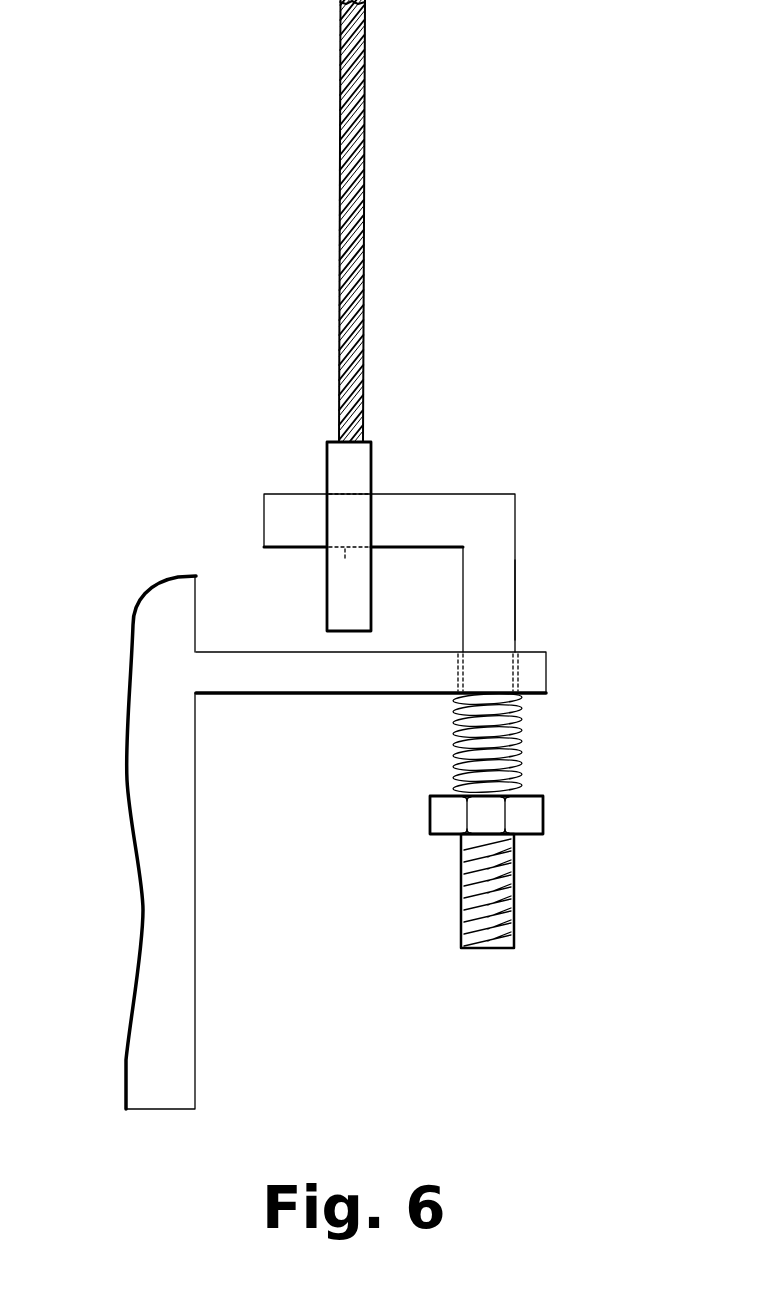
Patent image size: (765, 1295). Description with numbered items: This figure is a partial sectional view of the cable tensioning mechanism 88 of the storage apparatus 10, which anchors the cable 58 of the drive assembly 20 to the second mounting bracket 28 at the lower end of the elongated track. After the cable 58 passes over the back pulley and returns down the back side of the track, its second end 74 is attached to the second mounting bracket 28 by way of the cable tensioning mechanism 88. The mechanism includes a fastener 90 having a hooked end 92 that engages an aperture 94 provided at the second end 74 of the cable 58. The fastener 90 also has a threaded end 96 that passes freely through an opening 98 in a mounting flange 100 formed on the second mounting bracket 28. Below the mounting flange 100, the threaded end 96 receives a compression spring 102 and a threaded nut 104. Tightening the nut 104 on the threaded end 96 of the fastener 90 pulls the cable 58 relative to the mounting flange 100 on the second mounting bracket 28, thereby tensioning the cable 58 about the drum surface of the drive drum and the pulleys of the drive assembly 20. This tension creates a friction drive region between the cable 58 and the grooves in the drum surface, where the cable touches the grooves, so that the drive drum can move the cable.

The cable hanger assembly 10 is at (149, 842).
The drive assembly 20 is at (405, 221).
The second mounting bracket 28 is at (168, 1062).
The cable 58 is at (350, 287).
The second end 74 is at (357, 524).
The cable tensioning mechanism 88 is at (437, 535).
The fastener 90 is at (498, 592).
The hooked end 92 is at (287, 513).
The aperture 94 is at (345, 549).
The threaded end 96 is at (478, 895).
The opening 98 is at (516, 672).
The mounting flange 100 is at (405, 705).
The compression spring 102 is at (510, 743).
The threaded nut 104 is at (528, 815).